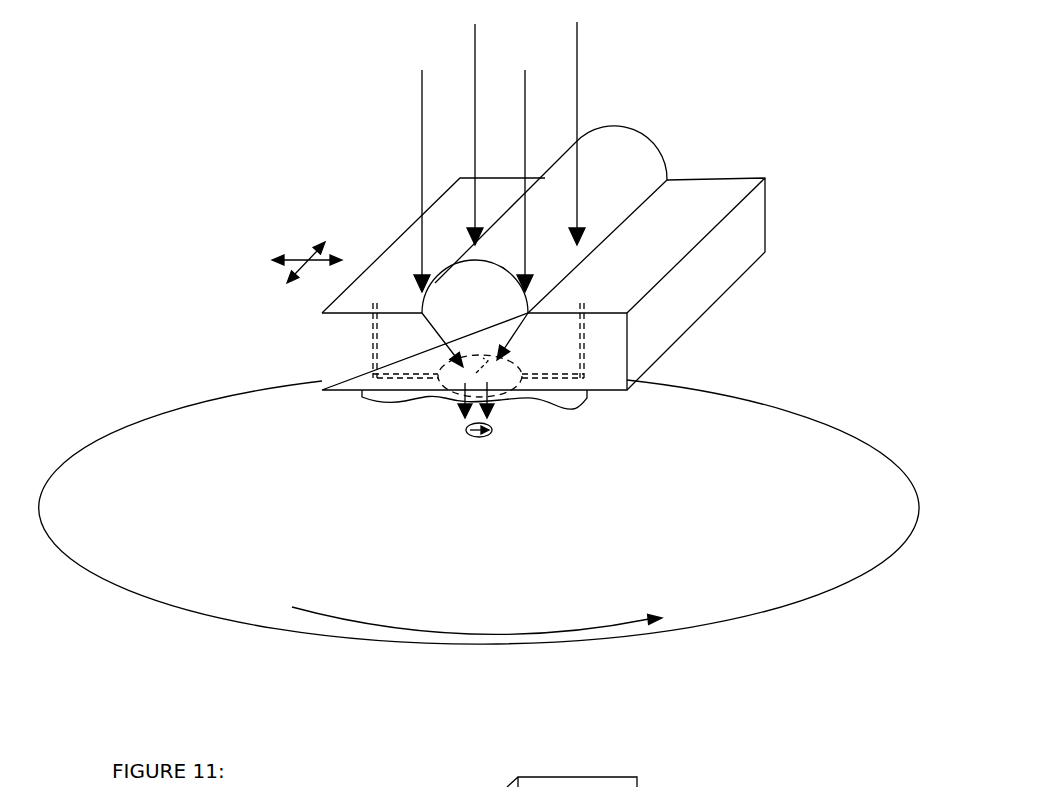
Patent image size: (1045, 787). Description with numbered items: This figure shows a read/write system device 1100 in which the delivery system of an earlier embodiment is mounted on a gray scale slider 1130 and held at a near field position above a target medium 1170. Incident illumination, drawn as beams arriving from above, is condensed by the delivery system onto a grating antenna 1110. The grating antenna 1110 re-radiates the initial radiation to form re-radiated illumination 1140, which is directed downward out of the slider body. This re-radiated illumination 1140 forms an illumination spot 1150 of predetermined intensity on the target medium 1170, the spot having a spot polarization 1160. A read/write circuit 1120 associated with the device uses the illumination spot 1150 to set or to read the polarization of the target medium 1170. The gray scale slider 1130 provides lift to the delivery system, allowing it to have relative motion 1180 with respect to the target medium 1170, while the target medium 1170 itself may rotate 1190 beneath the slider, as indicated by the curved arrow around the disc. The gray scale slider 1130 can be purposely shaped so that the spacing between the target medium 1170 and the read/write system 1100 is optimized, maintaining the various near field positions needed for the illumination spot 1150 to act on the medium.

The device 1100 is at (706, 124).
The grating antenna 1110 is at (462, 378).
The read/write circuit 1120 is at (546, 363).
The gray scale slider 1130 is at (578, 399).
The re-radiated illumination 1140 is at (493, 410).
The illumination spot 1150 is at (486, 424).
The spot polarization 1160 is at (470, 432).
The target medium 1170 is at (483, 572).
The relative motion 1180 is at (307, 261).
The rotation 1190 is at (487, 632).